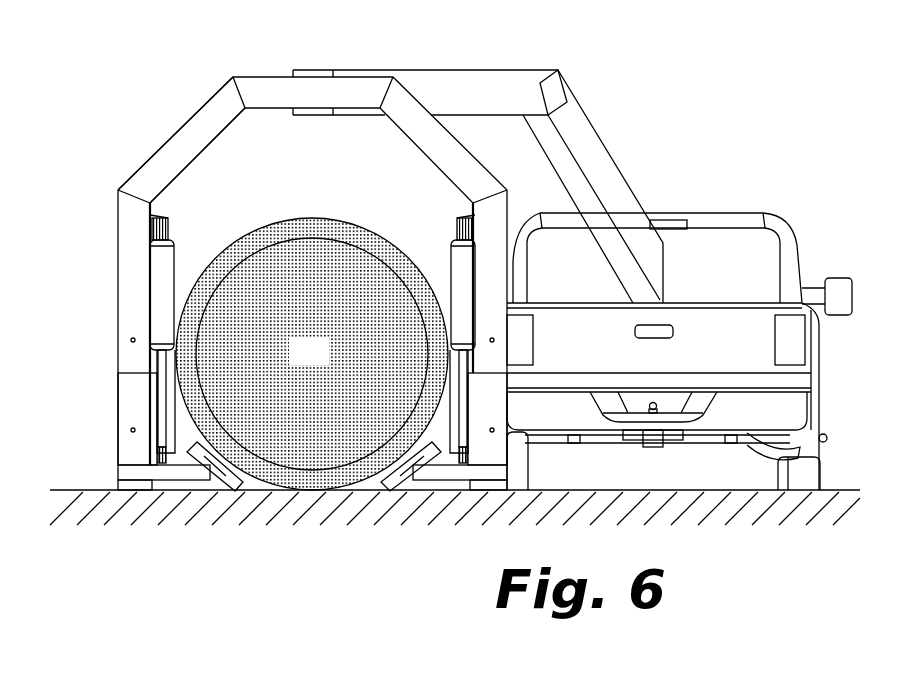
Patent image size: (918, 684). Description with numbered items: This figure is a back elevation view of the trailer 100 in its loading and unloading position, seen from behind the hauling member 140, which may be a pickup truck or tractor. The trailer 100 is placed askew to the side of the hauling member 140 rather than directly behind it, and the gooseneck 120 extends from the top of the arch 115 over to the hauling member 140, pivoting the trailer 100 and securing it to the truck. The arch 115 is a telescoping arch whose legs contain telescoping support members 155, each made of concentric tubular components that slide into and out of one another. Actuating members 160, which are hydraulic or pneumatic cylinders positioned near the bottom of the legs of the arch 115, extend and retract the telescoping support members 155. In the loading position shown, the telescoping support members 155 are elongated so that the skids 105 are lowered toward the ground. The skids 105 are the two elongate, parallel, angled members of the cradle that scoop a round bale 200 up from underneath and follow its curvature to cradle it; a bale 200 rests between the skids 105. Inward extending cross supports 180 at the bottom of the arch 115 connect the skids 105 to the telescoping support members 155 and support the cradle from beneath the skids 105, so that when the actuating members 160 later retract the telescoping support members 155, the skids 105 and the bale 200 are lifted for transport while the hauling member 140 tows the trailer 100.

The trailer 100 is at (86, 189).
The skid 105 is at (221, 483).
The arch 115 is at (207, 128).
The gooseneck 120 is at (500, 96).
The hauling member 140 is at (738, 278).
The telescoping support member 155 is at (135, 397).
The actuating member 160 is at (163, 297).
The cross support 180 is at (178, 469).
The bale 200 is at (327, 363).